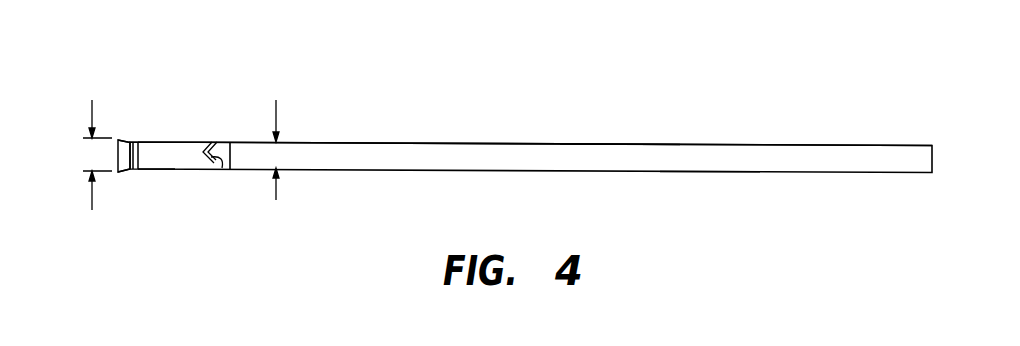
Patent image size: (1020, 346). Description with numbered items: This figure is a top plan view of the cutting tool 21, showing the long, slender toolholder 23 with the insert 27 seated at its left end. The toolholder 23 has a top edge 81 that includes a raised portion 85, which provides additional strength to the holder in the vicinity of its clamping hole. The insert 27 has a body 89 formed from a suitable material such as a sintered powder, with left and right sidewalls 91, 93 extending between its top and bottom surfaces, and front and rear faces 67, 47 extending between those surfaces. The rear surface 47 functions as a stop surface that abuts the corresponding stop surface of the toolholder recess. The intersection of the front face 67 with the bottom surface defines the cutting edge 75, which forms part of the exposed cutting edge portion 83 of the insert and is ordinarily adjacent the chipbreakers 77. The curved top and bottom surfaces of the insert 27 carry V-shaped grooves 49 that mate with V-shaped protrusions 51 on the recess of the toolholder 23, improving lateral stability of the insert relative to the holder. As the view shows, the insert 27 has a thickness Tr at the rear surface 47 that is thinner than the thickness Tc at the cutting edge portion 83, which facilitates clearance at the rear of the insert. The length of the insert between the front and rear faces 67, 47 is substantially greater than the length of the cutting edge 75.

The cutting tool 21 is at (556, 124).
The toolholder 23 is at (447, 144).
The insert 27 is at (152, 151).
The rear surface 47 is at (277, 156).
The V-shaped grooves 49 is at (222, 168).
The V-shaped protrusions 51 is at (201, 142).
The front end 67 is at (175, 167).
The cutting edge 75 is at (117, 156).
The chipbreakers 77 is at (123, 170).
The top edge 81 is at (617, 157).
The cutting edge portion 83 is at (128, 140).
The raised portion 85 is at (695, 158).
The body 89 is at (192, 167).
The left sidewall 91 is at (166, 142).
The right sidewall 93 is at (160, 170).
The thickness at cutting edge portion Tc is at (97, 144).
The thickness at rear surface Tr is at (276, 139).